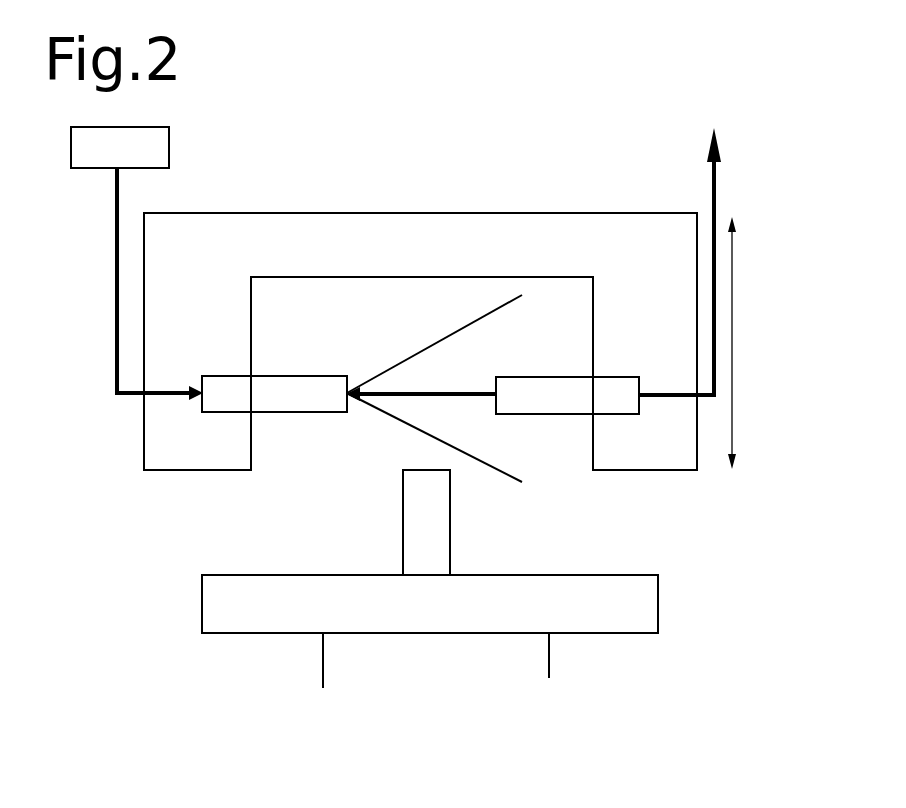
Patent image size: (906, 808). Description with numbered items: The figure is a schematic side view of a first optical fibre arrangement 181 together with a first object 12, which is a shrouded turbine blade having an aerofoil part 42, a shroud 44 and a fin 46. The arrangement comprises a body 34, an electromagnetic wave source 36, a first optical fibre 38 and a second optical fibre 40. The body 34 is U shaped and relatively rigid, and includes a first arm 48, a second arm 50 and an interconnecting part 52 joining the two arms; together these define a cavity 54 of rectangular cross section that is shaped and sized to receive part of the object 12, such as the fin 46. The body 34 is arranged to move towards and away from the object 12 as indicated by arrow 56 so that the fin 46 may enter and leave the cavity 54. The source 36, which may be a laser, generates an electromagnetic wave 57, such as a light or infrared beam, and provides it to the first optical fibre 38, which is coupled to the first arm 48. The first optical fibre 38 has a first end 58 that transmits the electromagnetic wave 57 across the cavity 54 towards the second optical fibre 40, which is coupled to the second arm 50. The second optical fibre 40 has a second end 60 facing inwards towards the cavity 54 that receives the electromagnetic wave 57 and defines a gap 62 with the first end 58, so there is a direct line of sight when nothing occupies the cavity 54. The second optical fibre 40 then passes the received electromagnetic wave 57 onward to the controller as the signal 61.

The first object 12 is at (684, 566).
The body 34 is at (648, 222).
The electromagnetic wave source 36 is at (170, 150).
The first optical fibre 38 is at (277, 386).
The second optical fibre 40 is at (563, 377).
The aerofoil part 42 is at (513, 652).
The shroud 44 is at (637, 615).
The fin 46 is at (437, 538).
The first arm 48 is at (213, 342).
The second arm 50 is at (660, 329).
The interconnecting part 52 is at (441, 259).
The cavity 54 is at (398, 322).
The arrow 56 is at (732, 307).
The electromagnetic wave 57 is at (114, 272).
The first end 58 is at (340, 401).
The second end 60 is at (498, 402).
The signal 61 is at (712, 158).
The gap 62 is at (450, 432).
The first optical fibre arrangement 181 is at (158, 548).